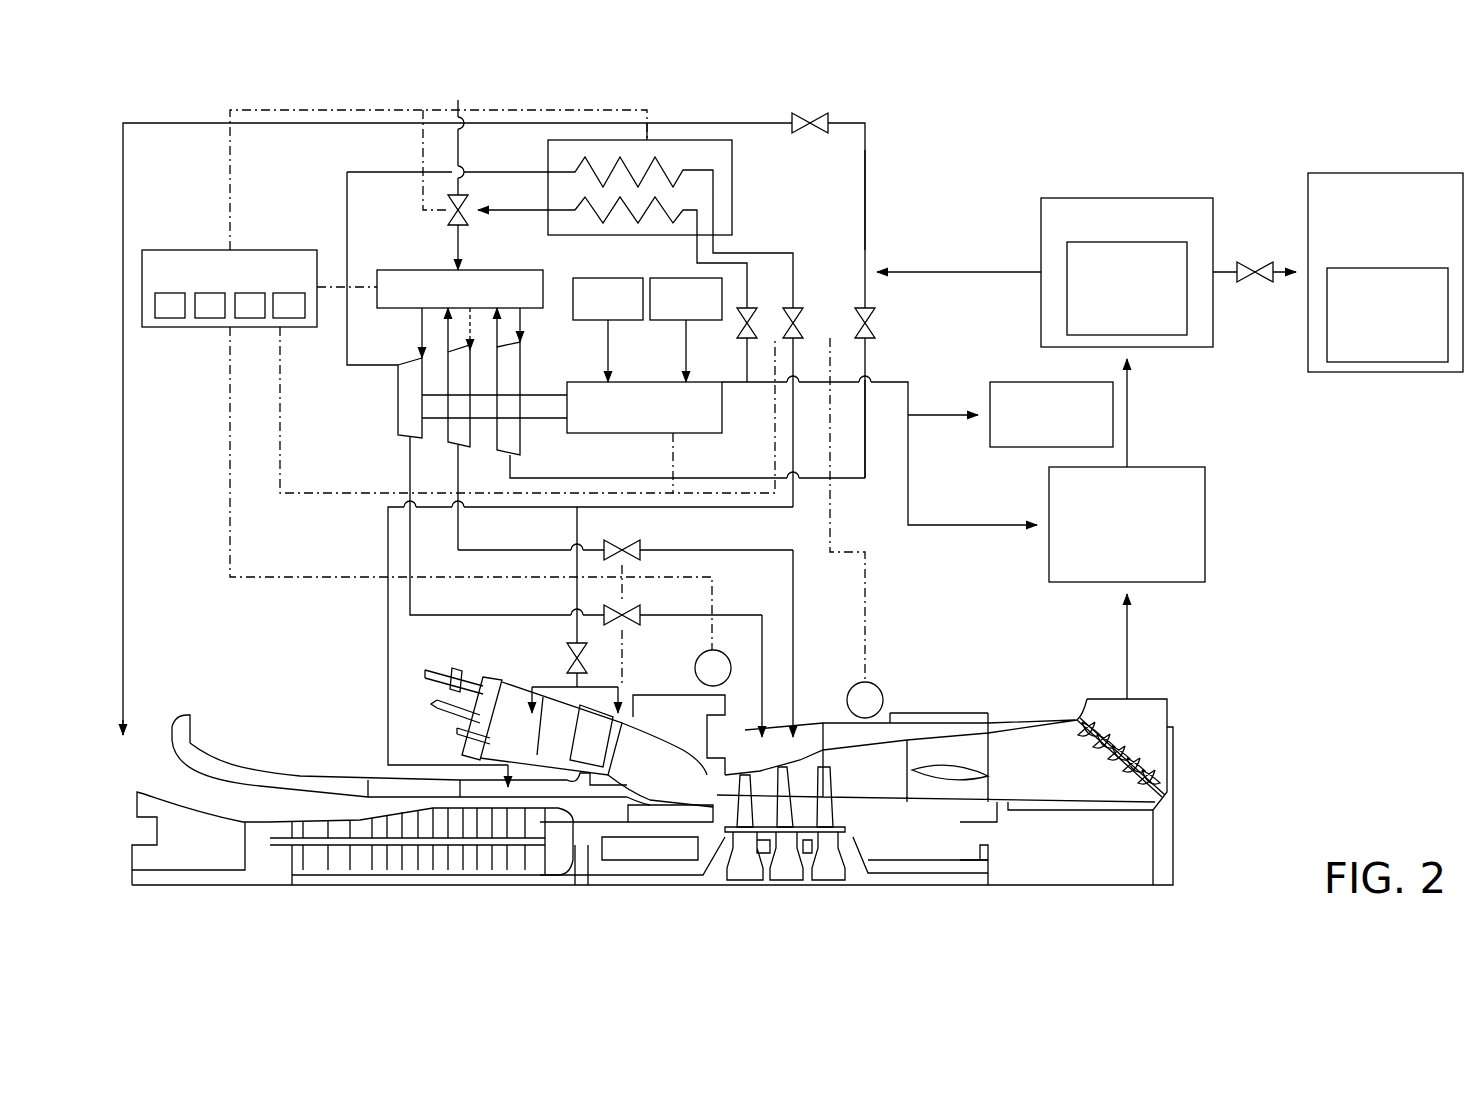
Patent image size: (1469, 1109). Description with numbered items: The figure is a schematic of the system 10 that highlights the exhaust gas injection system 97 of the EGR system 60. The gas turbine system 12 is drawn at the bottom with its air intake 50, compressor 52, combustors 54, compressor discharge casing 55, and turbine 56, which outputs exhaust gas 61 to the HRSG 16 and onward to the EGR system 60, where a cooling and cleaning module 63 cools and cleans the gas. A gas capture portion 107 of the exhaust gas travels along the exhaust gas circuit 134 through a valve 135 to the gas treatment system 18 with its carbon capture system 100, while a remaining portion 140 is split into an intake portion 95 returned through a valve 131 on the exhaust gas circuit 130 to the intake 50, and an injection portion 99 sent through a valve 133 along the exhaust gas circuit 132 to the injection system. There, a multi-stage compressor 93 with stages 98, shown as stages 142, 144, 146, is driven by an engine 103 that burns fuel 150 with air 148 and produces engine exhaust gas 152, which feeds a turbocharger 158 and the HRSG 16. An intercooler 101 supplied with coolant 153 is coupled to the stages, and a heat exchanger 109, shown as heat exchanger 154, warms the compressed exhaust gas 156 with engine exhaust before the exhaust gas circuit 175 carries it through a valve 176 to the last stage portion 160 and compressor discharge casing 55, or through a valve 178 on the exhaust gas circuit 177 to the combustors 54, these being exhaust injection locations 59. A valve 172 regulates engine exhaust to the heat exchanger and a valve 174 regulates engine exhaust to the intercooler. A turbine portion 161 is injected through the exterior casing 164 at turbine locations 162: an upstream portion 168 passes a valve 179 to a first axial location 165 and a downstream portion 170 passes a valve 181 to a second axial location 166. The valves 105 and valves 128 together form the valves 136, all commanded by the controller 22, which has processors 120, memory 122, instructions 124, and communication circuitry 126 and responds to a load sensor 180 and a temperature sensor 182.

The system 10 is at (424, 906).
The gas turbine system 12 is at (571, 907).
The HRSG 16 is at (1163, 467).
The gas treatment system 18 is at (1420, 173).
The controller 22 is at (278, 250).
The air intake 50 is at (172, 782).
The compressor 52 is at (375, 886).
The combustors 54 is at (590, 733).
The compressor discharge casing 55 is at (638, 717).
The turbine 56 is at (936, 793).
The exhaust injection locations 59 is at (897, 650).
The EGR system 60 is at (1163, 198).
The exhaust gas 61 is at (1130, 640).
The cooling and cleaning module 63 is at (1155, 337).
The multi-stage compressor 93 is at (532, 356).
The intake portion 95 is at (870, 180).
The exhaust gas injection system 97 is at (905, 153).
The stages 98 is at (530, 430).
The injection portion 99 is at (868, 395).
The carbon capture system 100 is at (1388, 372).
The intercooler 101 is at (432, 270).
The engine 103 is at (643, 433).
The valves 105 is at (827, 255).
The gas capture portion 107 is at (1218, 268).
The heat exchanger 109 is at (673, 118).
The processors 120 is at (170, 318).
The memory 122 is at (213, 318).
The instructions 124 is at (246, 318).
The communication circuitry 126 is at (290, 318).
The valves 128 is at (932, 98).
The exhaust gas circuit 130 is at (850, 123).
The valve 131 is at (822, 116).
The exhaust gas circuit 132 is at (866, 485).
The valve 133 is at (877, 328).
The exhaust gas circuit 134 is at (1225, 278).
The valve 135 is at (1258, 285).
The valves 136 is at (850, 533).
The remaining portion 140 is at (975, 272).
The stage 142 is at (525, 382).
The stage 144 is at (470, 445).
The stage 146 is at (397, 417).
The air 148 is at (682, 278).
The fuel 150 is at (602, 278).
The engine exhaust gas 152 is at (735, 385).
The coolant 153 is at (462, 108).
The heat exchanger 154 is at (733, 190).
The compressed exhaust gas 156 is at (372, 367).
The turbocharger 158 is at (1030, 450).
The last stage portion 160 is at (482, 777).
The turbine portion 161 is at (400, 479).
The turbine locations 162 is at (797, 645).
The exterior casing 164 is at (810, 737).
The first axial location 165 is at (753, 702).
The second axial location 166 is at (830, 740).
The upstream portion 168 is at (763, 630).
The downstream portion 170 is at (798, 608).
The valve 172 is at (740, 330).
The valve 174 is at (468, 222).
The exhaust gas circuit 175 is at (698, 507).
The valve 176 is at (803, 322).
The exhaust gas circuit 177 is at (572, 603).
The valve 178 is at (562, 652).
The valve 179 is at (642, 620).
The sensor 180 is at (882, 688).
The valve 181 is at (604, 545).
The sensor 182 is at (695, 665).